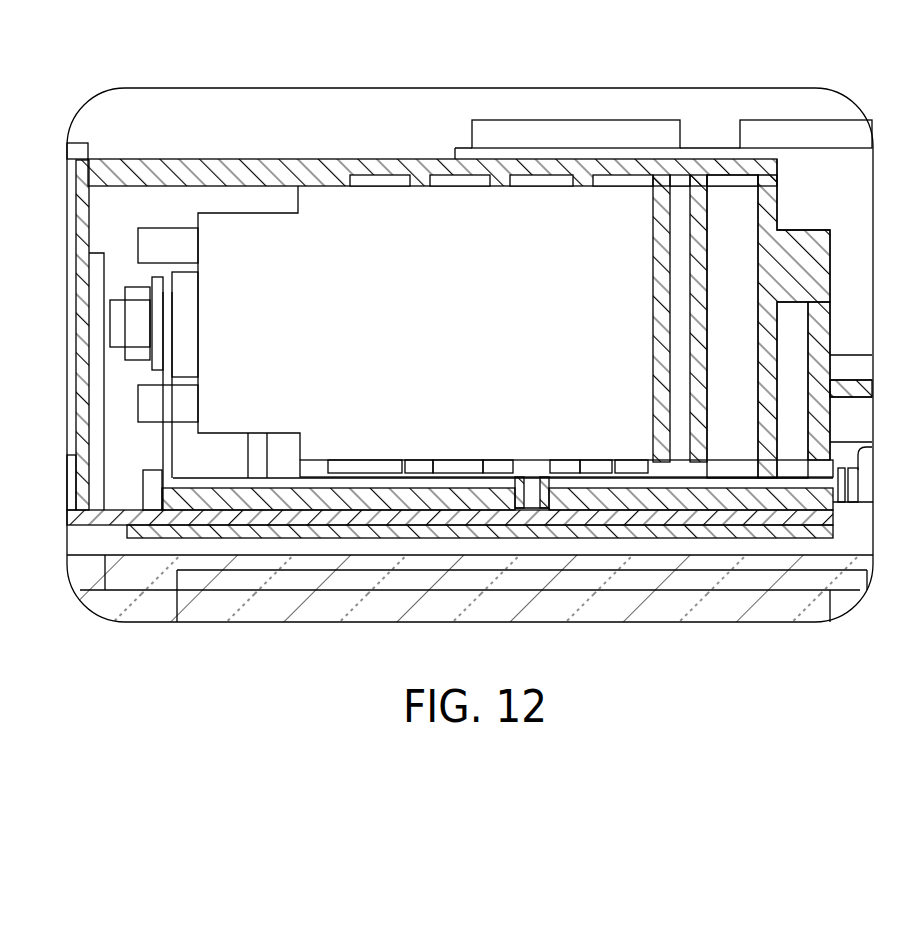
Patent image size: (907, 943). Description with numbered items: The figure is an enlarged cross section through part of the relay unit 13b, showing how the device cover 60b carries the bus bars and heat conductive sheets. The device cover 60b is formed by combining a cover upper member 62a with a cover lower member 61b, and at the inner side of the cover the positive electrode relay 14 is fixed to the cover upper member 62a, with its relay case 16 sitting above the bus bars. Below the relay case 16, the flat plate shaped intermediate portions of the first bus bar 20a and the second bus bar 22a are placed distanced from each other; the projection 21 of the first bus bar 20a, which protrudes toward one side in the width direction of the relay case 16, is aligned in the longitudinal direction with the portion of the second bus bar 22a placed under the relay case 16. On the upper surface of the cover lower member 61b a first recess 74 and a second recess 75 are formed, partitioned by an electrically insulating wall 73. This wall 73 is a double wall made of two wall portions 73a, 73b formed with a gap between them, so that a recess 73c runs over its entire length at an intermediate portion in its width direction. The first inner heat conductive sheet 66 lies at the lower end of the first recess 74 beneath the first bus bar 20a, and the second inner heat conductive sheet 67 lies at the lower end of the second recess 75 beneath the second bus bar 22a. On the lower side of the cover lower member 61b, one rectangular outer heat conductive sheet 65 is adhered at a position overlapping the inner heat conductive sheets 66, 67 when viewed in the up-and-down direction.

The relay unit 13b is at (192, 130).
The device cover 60b is at (250, 158).
The positive electrode relay 14 is at (365, 242).
The cover upper member 62a is at (420, 157).
The relay case 16 is at (430, 288).
The second bus bar 22a is at (232, 477).
The second recess 75 is at (368, 508).
The electrically insulating wall 73 is at (665, 440).
The wall portion 73a is at (505, 500).
The wall portion 73b is at (580, 490).
The recess 73c is at (538, 500).
The first bus bar 20a is at (620, 475).
The projection 21 is at (632, 470).
The first recess 74 is at (720, 492).
The cover lower member 61b is at (245, 535).
The outer heat conductive sheet 65 is at (548, 520).
The first inner heat conductive sheet 66 is at (667, 500).
The second inner heat conductive sheet 67 is at (448, 500).